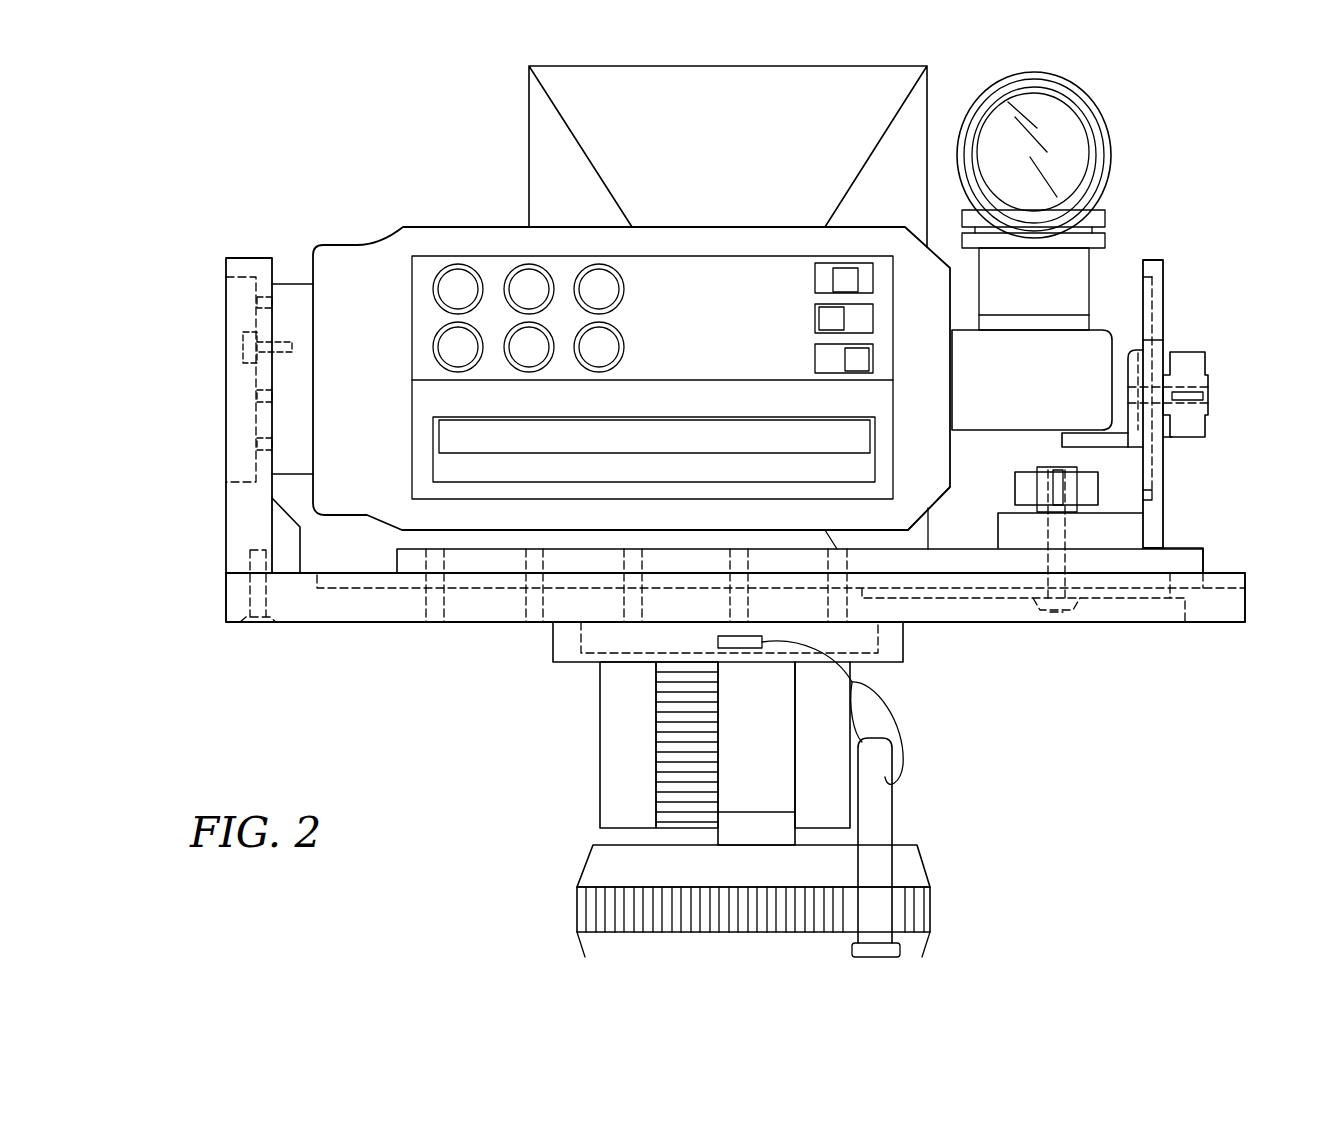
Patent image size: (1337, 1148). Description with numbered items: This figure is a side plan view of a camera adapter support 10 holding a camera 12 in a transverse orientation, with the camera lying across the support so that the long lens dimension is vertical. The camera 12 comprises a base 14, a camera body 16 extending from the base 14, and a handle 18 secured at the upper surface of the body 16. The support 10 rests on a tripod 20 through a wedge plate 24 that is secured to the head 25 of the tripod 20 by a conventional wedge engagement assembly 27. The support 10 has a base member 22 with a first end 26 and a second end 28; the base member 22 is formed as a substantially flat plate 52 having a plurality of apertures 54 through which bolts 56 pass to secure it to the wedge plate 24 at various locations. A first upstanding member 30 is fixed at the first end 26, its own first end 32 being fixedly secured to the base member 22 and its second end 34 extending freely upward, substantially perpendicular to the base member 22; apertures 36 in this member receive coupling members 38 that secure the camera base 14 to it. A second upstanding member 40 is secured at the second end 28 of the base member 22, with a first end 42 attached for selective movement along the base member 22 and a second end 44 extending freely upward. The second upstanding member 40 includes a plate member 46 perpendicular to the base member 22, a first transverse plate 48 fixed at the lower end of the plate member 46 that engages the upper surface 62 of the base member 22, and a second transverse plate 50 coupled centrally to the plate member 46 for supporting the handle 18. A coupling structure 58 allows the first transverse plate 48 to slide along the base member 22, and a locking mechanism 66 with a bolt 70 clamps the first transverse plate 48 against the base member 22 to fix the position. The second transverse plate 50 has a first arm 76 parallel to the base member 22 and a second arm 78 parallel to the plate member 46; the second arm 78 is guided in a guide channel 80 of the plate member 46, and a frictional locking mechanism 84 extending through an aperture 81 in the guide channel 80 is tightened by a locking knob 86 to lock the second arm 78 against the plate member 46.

The camera adapter support 10 is at (248, 673).
The camera 12 is at (345, 226).
The base 14 is at (292, 294).
The camera body 16 is at (428, 233).
The handle 18 is at (1113, 346).
The tripod 20 is at (548, 811).
The base member 22 is at (1196, 628).
The wedge plate 24 is at (553, 636).
The head 25 is at (572, 661).
The first end 26 is at (212, 634).
The wedge engagement assembly 27 is at (898, 716).
The second end 28 is at (1253, 629).
The first upstanding member 30 is at (236, 256).
The first end 32 is at (236, 552).
The second end 34 is at (236, 278).
The apertures 36 is at (258, 443).
The coupling members 38 is at (244, 344).
The second upstanding member 40 is at (1156, 258).
The first end 42 is at (1166, 541).
The second end 44 is at (1164, 263).
The plate member 46 is at (1164, 341).
The first transverse plate 48 is at (1030, 535).
The second transverse plate 50 is at (1099, 488).
The flat plate 52 is at (336, 623).
The apertures 54 is at (532, 600).
The bolts 56 is at (749, 567).
The coupling structure 58 is at (1040, 622).
The upper surface 62 is at (954, 542).
The locking mechanism 66 is at (1164, 531).
The bolt 70 is at (1067, 560).
The first arm 76 is at (1062, 434).
The second arm 78 is at (1133, 350).
The guide channel 80 is at (1161, 288).
The aperture 81 is at (1164, 458).
The frictional locking mechanism 84 is at (1164, 443).
The locking knob 86 is at (1208, 381).